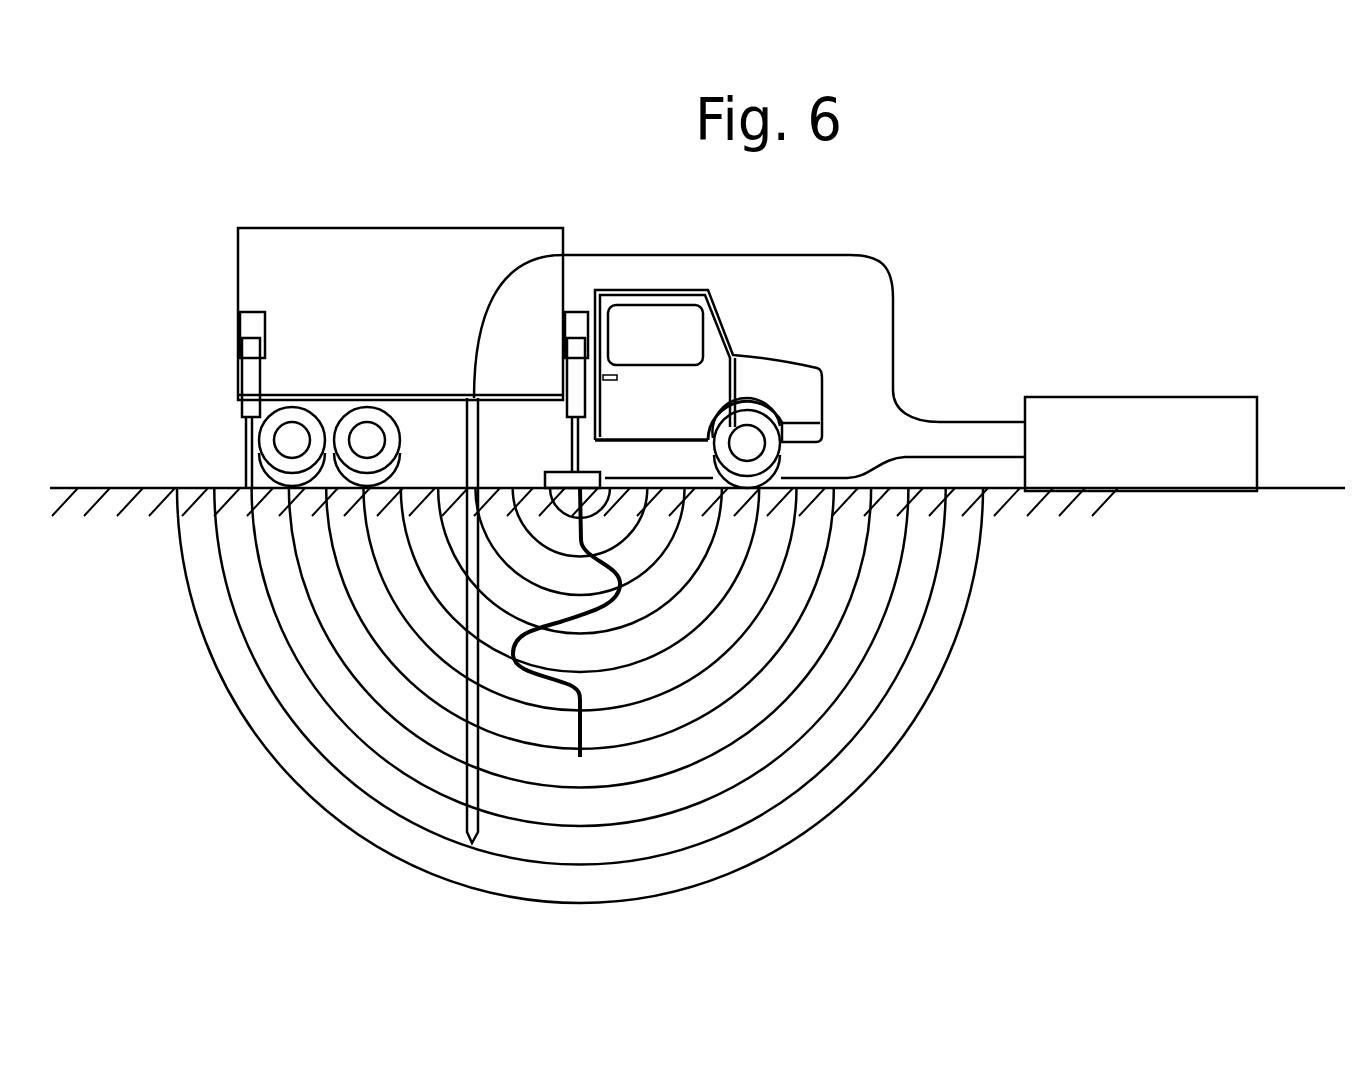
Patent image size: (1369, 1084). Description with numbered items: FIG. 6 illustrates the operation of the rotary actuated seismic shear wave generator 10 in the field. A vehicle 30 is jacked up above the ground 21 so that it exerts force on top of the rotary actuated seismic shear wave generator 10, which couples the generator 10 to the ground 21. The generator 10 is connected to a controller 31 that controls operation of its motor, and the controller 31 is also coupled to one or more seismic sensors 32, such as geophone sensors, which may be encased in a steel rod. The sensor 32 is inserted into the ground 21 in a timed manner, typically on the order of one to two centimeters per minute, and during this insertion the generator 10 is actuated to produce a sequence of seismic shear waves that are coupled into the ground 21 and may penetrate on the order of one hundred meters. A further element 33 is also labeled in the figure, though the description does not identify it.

The seismic source / sensor unit 10 is at (549, 472).
The ground 21 is at (128, 507).
The vehicle 30 is at (824, 391).
The controller 31 is at (1259, 421).
The rod 32 is at (467, 823).
The jacks 33 is at (242, 408).